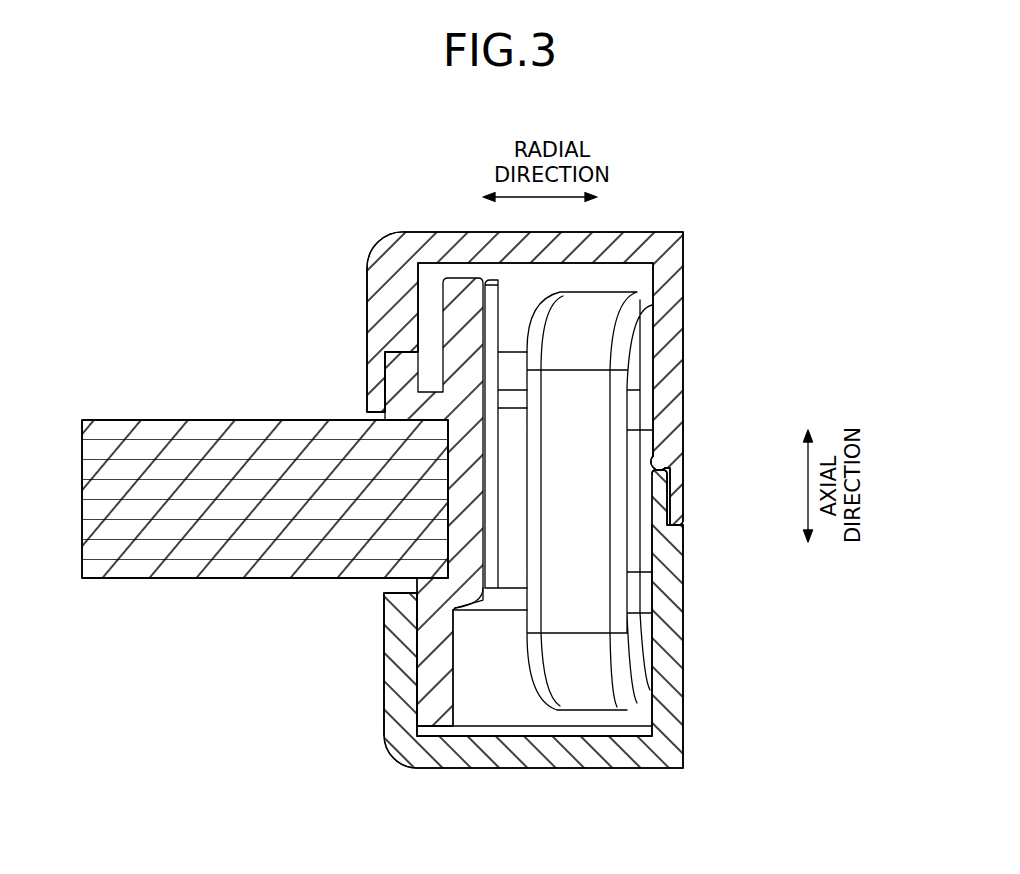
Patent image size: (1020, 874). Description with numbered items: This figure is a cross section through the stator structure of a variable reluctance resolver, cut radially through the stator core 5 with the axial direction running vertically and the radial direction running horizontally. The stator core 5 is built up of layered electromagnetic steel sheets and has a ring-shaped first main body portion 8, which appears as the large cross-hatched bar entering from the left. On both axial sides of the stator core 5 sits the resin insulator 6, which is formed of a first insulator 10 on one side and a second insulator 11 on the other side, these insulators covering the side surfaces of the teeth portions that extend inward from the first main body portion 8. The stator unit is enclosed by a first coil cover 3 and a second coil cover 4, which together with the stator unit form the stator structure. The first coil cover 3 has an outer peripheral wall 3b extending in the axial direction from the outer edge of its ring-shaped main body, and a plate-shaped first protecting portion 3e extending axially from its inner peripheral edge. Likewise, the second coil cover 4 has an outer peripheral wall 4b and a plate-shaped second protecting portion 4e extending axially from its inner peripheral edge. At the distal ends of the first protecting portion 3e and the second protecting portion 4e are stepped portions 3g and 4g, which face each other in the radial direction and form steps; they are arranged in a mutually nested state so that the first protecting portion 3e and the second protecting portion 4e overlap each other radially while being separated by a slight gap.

The first coil cover 3 is at (436, 228).
The outer peripheral wall 3b is at (392, 300).
The first protecting portion 3e is at (660, 326).
The stepped portion 3g is at (676, 442).
The second coil cover 4 is at (452, 778).
The outer peripheral wall 4b is at (400, 657).
The second protecting portion 4e is at (668, 644).
The stepped portion 4g is at (668, 505).
The stator core 5 is at (170, 414).
The insulator 6 is at (336, 239).
The first main body portion 8 is at (257, 418).
The first insulator 10 is at (457, 285).
The second insulator 11 is at (433, 697).